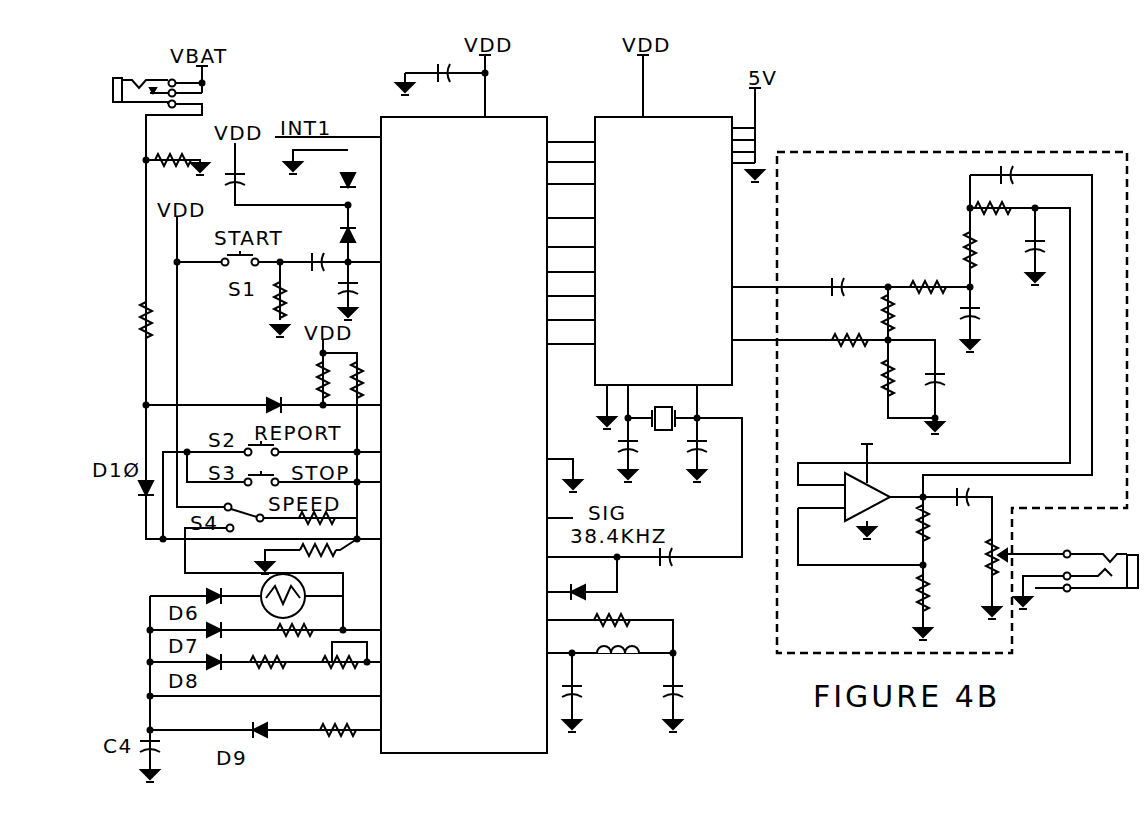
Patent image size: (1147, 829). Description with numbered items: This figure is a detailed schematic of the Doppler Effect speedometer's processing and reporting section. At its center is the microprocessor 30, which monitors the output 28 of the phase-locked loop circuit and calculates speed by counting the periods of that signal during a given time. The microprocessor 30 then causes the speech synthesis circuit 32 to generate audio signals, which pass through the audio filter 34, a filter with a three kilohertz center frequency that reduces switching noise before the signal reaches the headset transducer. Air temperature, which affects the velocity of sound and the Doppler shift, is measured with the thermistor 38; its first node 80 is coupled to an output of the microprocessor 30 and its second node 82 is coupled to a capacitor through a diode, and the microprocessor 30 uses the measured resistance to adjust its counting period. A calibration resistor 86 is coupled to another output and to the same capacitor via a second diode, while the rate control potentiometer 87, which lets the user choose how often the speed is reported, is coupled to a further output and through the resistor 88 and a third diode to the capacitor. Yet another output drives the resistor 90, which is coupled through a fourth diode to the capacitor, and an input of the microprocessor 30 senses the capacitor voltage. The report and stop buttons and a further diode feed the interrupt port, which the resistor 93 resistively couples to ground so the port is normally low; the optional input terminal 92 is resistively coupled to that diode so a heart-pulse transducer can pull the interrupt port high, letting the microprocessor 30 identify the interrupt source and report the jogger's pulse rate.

The output of phase-locked loop circuit 28 is at (448, 423).
The microprocessor 30 is at (452, 493).
The speech synthesis circuit 32 is at (663, 237).
The audio filter 34 is at (935, 402).
The thermistor 38 is at (309, 621).
The first node 80 is at (282, 578).
The second node 82 is at (269, 602).
The calibration resistor 86 is at (320, 650).
The potentiometer 87 is at (340, 676).
The resistor 88 is at (269, 676).
The resistor 90 is at (338, 748).
The input terminal 92 is at (144, 78).
The resistor 93 is at (309, 558).